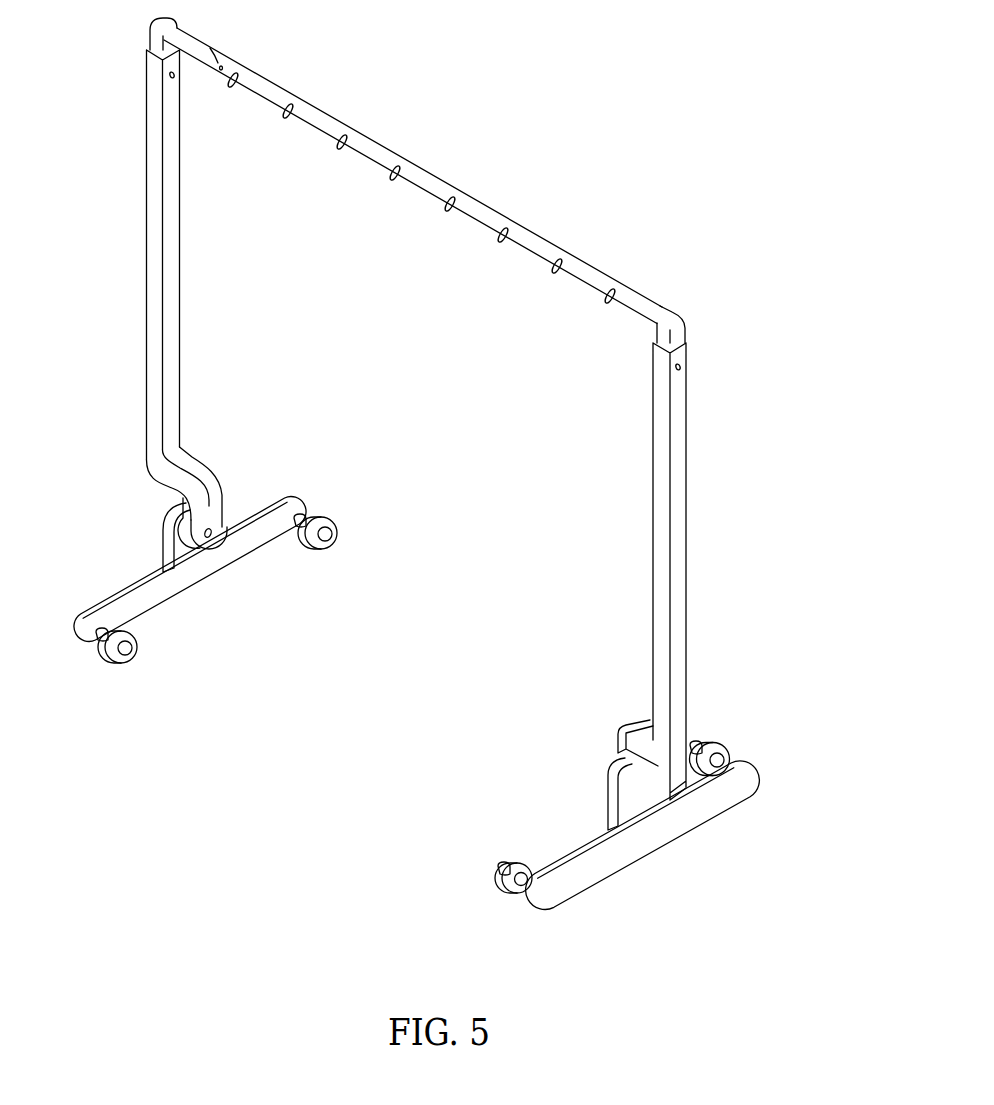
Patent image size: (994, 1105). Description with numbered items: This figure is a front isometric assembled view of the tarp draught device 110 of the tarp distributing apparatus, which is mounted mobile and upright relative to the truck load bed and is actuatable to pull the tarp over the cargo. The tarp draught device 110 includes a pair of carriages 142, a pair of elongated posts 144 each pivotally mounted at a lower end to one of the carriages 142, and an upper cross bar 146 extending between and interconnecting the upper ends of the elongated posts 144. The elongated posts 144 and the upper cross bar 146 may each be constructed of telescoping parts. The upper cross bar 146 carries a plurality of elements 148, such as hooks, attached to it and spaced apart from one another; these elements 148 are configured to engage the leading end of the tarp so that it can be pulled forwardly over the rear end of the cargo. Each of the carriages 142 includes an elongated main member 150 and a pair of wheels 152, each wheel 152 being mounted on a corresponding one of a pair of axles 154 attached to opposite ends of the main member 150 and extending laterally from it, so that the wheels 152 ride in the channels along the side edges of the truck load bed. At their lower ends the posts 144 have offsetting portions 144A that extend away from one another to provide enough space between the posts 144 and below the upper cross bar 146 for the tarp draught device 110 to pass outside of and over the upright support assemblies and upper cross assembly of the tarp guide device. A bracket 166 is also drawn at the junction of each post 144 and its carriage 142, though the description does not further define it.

The tarp draught device 110 is at (593, 128).
The carriage 142 is at (252, 612).
The elongated post 144 is at (182, 262).
The offsetting portion 144A is at (192, 470).
The upper cross bar 146 is at (438, 165).
The element 148 is at (235, 84).
The elongated main member 150 is at (272, 558).
The wheel 152 is at (338, 538).
The axle 154 is at (303, 512).
The bracket 166 is at (165, 520).